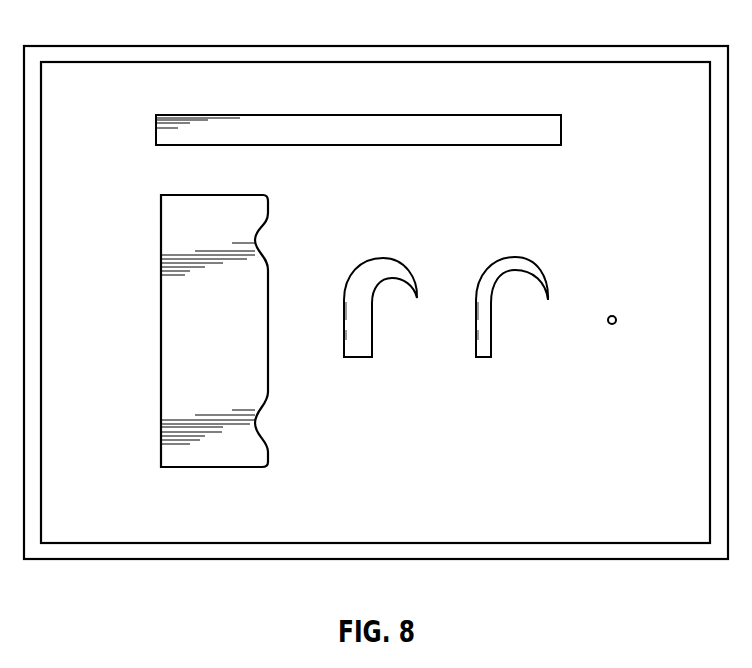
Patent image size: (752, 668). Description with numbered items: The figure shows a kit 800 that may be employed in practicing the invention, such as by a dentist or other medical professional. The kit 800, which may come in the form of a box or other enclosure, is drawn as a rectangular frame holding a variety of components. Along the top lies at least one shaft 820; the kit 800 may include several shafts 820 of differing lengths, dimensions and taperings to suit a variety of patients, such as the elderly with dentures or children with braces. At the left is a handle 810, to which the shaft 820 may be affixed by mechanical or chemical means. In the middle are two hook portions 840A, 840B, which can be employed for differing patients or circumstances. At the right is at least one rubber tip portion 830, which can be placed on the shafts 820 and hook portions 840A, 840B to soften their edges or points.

The kit 800 is at (667, 45).
The handle 810 is at (210, 467).
The shaft 820 is at (494, 114).
The rubber tip portion 830 is at (614, 316).
The hook portion 840A is at (358, 357).
The hook portion 840B is at (485, 357).